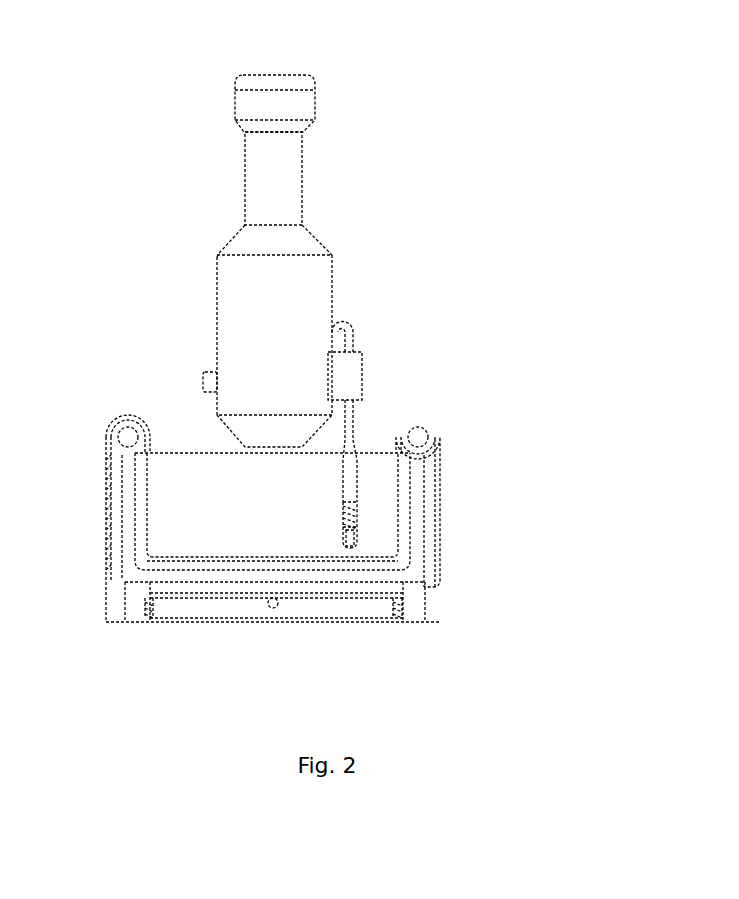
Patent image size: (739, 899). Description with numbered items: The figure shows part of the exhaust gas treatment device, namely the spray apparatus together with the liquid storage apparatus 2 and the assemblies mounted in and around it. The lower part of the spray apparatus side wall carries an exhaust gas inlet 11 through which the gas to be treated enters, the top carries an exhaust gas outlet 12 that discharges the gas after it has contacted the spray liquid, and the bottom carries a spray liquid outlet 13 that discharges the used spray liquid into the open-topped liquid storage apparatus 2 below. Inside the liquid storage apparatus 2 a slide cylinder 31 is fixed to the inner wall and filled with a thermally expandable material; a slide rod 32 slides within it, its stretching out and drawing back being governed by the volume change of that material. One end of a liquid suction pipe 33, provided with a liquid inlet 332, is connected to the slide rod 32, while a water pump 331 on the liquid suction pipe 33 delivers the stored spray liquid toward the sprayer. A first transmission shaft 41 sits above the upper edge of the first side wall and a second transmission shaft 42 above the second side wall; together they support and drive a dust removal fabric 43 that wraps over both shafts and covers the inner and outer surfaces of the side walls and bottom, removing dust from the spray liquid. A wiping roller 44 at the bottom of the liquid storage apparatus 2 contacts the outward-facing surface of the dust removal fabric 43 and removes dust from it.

The exhaust gas outlet 12 is at (284, 80).
The exhaust gas inlet 11 is at (213, 372).
The spray liquid outlet 13 is at (240, 440).
The liquid storage apparatus 2 is at (133, 513).
The slide cylinder 31 is at (362, 527).
The slide rod 32 is at (355, 492).
The liquid suction pipe 33 is at (350, 422).
The water pump 331 is at (353, 360).
The liquid inlet 332 is at (358, 472).
The first transmission shaft 41 is at (123, 435).
The second transmission shaft 42 is at (420, 440).
The dust removal fabric 43 is at (104, 460).
The wiping roller 44 is at (276, 607).